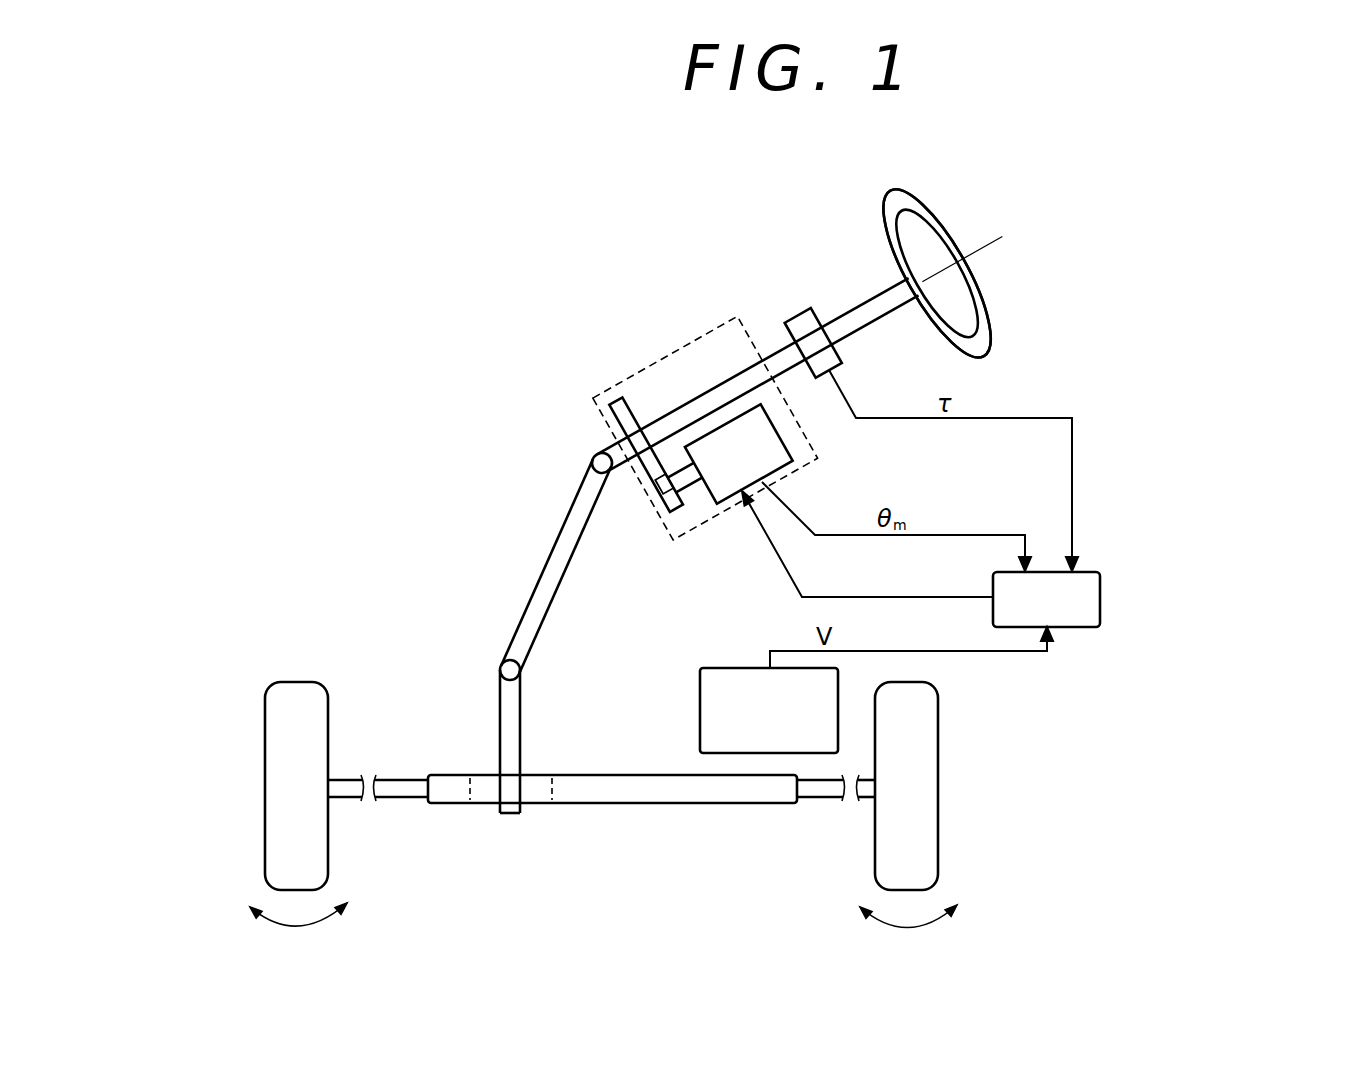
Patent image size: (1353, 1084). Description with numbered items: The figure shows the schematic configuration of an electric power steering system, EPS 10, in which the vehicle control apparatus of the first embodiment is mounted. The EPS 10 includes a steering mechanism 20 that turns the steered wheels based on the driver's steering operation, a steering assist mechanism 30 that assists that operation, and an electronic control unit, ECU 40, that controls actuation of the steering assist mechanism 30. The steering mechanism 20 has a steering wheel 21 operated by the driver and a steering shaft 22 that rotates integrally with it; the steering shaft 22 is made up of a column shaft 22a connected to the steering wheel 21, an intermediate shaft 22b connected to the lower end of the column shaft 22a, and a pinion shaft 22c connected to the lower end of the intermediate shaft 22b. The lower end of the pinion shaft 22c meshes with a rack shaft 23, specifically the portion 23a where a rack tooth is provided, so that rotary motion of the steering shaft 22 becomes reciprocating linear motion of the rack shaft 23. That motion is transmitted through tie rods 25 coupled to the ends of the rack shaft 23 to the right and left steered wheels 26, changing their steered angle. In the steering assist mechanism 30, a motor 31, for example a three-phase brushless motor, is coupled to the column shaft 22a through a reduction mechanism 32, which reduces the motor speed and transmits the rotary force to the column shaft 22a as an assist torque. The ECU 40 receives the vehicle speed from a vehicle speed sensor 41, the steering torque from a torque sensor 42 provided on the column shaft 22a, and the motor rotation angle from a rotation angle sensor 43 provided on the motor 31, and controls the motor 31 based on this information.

The EPS 10 is at (1150, 218).
The steering mechanism 20 is at (994, 295).
The steering wheel 21 is at (917, 202).
The steering shaft 22 is at (498, 460).
The column shaft 22a is at (602, 453).
The intermediate shaft 22b is at (563, 544).
The pinion shaft 22c is at (490, 684).
The rack shaft 23 is at (631, 775).
The portion where a rack tooth is provided 23a is at (537, 782).
The tie rod 25 is at (400, 798).
The steered wheel 26 is at (265, 840).
The steering assist mechanism 30 is at (672, 358).
The motor 31 is at (711, 501).
The reduction mechanism 32 is at (655, 510).
The electronic control unit (ECU) 40 is at (1101, 600).
The vehicle speed sensor 41 is at (731, 668).
The torque sensor 42 is at (797, 315).
The rotation angle sensor 43 is at (753, 485).